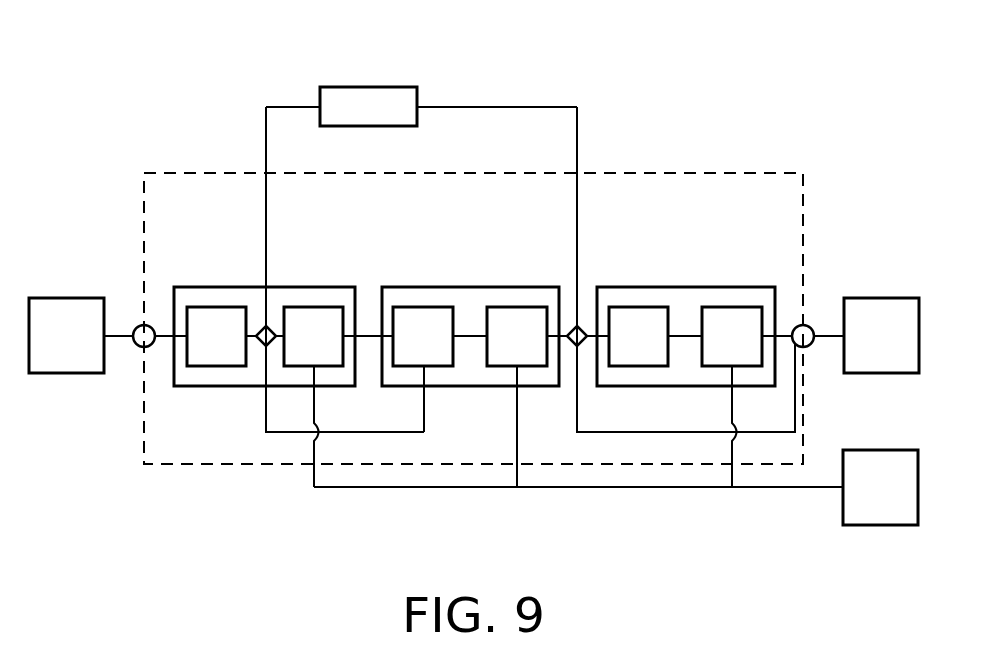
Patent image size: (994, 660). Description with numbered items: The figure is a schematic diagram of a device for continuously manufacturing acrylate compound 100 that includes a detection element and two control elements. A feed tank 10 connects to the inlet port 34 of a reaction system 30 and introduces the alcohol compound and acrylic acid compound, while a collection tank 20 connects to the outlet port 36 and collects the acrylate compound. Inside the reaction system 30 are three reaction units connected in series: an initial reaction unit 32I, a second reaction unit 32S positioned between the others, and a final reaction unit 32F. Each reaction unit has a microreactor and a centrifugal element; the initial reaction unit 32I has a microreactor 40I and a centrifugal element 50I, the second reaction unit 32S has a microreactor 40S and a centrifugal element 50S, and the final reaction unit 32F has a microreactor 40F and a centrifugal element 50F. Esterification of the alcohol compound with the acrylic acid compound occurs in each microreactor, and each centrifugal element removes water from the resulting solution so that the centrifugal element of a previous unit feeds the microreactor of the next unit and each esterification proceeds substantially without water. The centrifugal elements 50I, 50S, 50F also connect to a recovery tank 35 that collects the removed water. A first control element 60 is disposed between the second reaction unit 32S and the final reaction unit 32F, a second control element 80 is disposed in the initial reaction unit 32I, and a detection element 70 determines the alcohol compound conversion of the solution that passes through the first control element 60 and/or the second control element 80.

The device for continuously manufacturing acrylate compound 100 is at (852, 85).
The feed tank 10 is at (69, 298).
The collection tank 20 is at (882, 298).
The reaction system 30 is at (727, 173).
The initial reaction unit 32I is at (185, 287).
The second reaction unit 32S is at (392, 287).
The final reaction unit 32F is at (607, 287).
The inlet port 34 is at (137, 347).
The recovery tank 35 is at (882, 530).
The outlet port 36 is at (811, 346).
The microreactor 40I is at (214, 307).
The microreactor 40S is at (422, 307).
The microreactor 40F is at (638, 307).
The centrifugal element 50I is at (313, 307).
The centrifugal element 50S is at (515, 307).
The centrifugal element 50F is at (730, 307).
The first control element 60 is at (575, 347).
The detection element 70 is at (367, 87).
The second control element 80 is at (262, 347).